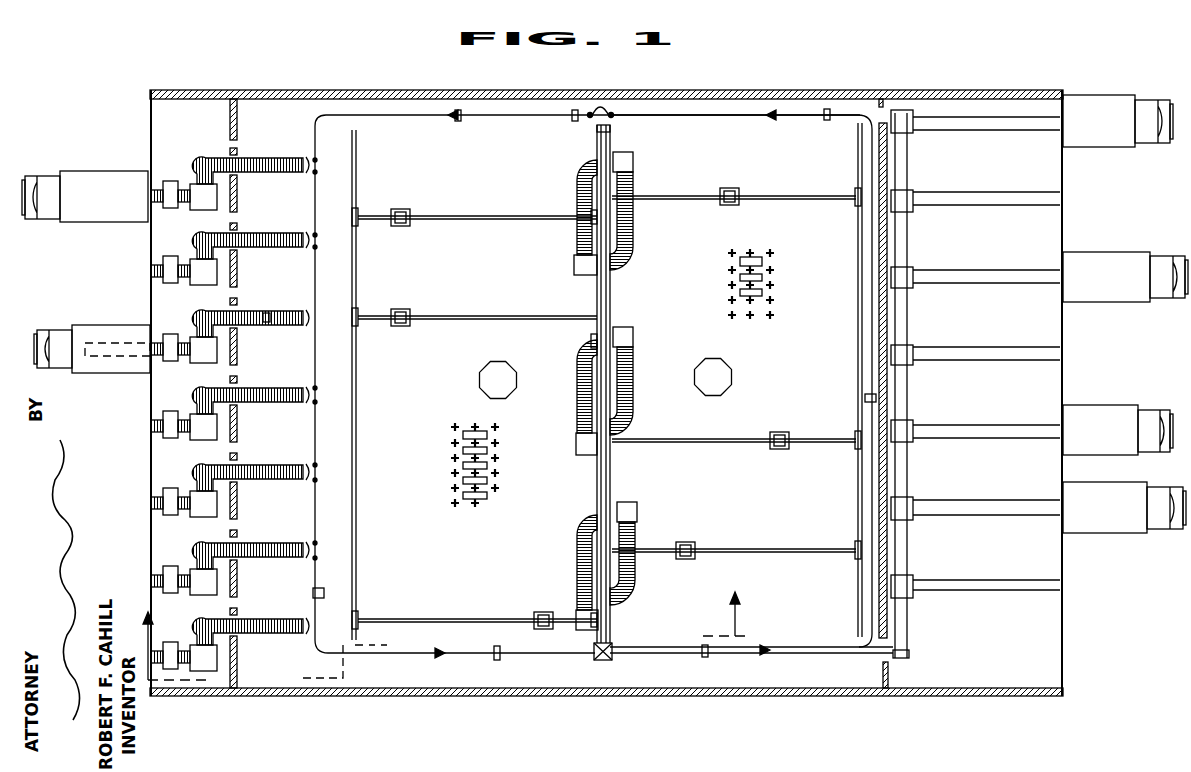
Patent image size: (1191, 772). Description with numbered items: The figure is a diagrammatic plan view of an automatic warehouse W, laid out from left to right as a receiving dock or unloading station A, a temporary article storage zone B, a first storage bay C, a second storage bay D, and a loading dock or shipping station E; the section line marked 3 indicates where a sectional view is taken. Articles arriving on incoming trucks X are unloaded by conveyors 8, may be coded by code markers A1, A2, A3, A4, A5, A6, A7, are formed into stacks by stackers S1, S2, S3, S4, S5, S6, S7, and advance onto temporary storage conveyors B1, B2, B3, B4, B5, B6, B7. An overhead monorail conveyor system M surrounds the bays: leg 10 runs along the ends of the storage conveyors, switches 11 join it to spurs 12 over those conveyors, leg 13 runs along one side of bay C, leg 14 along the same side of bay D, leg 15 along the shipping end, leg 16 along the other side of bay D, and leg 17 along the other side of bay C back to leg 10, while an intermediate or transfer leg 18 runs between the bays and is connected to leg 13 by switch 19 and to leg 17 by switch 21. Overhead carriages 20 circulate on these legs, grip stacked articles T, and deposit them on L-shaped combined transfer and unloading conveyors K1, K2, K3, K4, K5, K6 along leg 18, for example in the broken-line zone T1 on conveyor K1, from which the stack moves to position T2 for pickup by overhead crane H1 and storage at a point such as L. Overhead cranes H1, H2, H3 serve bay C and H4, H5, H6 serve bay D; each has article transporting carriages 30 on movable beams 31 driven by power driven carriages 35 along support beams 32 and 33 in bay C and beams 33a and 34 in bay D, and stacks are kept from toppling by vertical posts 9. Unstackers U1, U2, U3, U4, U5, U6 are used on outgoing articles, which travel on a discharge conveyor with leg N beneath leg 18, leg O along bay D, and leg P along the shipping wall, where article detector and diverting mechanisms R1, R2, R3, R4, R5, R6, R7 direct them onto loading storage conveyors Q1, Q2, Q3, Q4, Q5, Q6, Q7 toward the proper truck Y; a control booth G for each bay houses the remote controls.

The warehouse W is at (705, 80).
The receiving dock or unloading station A is at (166, 120).
The temporary article storage zone B is at (252, 120).
The first storage bay C is at (491, 144).
The second storage bay D is at (726, 134).
The loading dock or shipping station E is at (978, 154).
The overhead monorail conveyor system M is at (847, 112).
The leg of discharge conveyor N is at (613, 130).
The leg of discharge conveyor O is at (812, 646).
The leg of discharge conveyor P is at (906, 150).
The incoming trucks X is at (100, 202).
The truck being loaded Y is at (1100, 128).
The storage point L is at (456, 514).
The control booth G is at (500, 376).
The stacked articles T is at (452, 440).
The deposit zone T1 is at (578, 511).
The pickup position T2 is at (584, 598).
The section line 3- 3 is at (439, 636).
The conveyors 8 is at (155, 204).
The vertical posts 9 is at (500, 443).
The monorail leg 10 is at (313, 122).
The monorail switches 11 is at (317, 174).
The monorail spurs 12 is at (278, 172).
The monorail leg 13 is at (452, 655).
The monorail leg 14 is at (810, 655).
The monorail leg 15 is at (857, 166).
The monorail leg 16 is at (704, 117).
The monorail leg 17 is at (401, 118).
The intermediate or transfer leg 18 is at (609, 274).
The switch 19 is at (612, 657).
The overhead carriages 20 is at (458, 121).
The switch 21 is at (612, 113).
The article transporting carriages 30 is at (400, 209).
The overhead rails or beams 31 is at (450, 216).
The transverse support beam 32 is at (357, 372).
The parallel beam 33 is at (597, 287).
The beam 33a is at (612, 298).
The parallel companion beam 34 is at (857, 327).
The power driven carriages 35 is at (358, 211).
The code marker A1 is at (170, 642).
The code marker A2 is at (170, 566).
The code marker A3 is at (170, 488).
The code marker A4 is at (170, 411).
The code marker A5 is at (170, 334).
The code marker A6 is at (170, 256).
The code marker A7 is at (170, 181).
The stacker S1 is at (206, 672).
The stacker S2 is at (206, 595).
The stacker S3 is at (206, 517).
The stacker S4 is at (206, 440).
The stacker S5 is at (206, 363).
The stacker S6 is at (206, 285).
The stacker S7 is at (206, 210).
The temporary storage conveyor B1 is at (286, 618).
The temporary storage conveyor B2 is at (281, 542).
The temporary storage conveyor B3 is at (281, 464).
The temporary storage conveyor B4 is at (278, 387).
The temporary storage conveyor B5 is at (278, 310).
The temporary storage conveyor B6 is at (278, 232).
The temporary storage conveyor B7 is at (287, 157).
The overhead crane H1 is at (430, 617).
The overhead crane H2 is at (470, 321).
The overhead crane H3 is at (472, 221).
The overhead crane H4 is at (760, 554).
The overhead crane H5 is at (718, 444).
The overhead crane H6 is at (800, 201).
The combined transfer and unloading conveyor K1 is at (577, 547).
The combined transfer and unloading conveyor K2 is at (577, 392).
The combined transfer and unloading conveyor K3 is at (577, 182).
The combined transfer and unloading conveyor K4 is at (636, 580).
The combined transfer and unloading conveyor K5 is at (633, 392).
The combined transfer and unloading conveyor K6 is at (633, 240).
The unstacker U1 is at (576, 616).
The unstacker U2 is at (576, 440).
The unstacker U3 is at (574, 265).
The carton unstacker U4 is at (637, 511).
The carton unstacker U5 is at (633, 336).
The carton unstacker U6 is at (633, 162).
The article detector and diverting mechanism R1 is at (913, 583).
The article detector and diverting mechanism R2 is at (913, 513).
The article detector and diverting mechanism R3 is at (913, 436).
The article detector and diverting mechanism R4 is at (913, 360).
The article detector and diverting mechanism R5 is at (913, 282).
The article detector and diverting mechanism R6 is at (913, 206).
The article detector and diverting mechanism R7 is at (913, 120).
The loading storage conveyor Q1 is at (1000, 580).
The loading storage conveyor Q2 is at (1000, 517).
The loading storage conveyor Q3 is at (1000, 440).
The loading storage conveyor Q4 is at (1000, 362).
The loading storage conveyor Q5 is at (1000, 285).
The loading storage conveyor Q6 is at (1000, 207).
The loading storage conveyor Q7 is at (1036, 132).